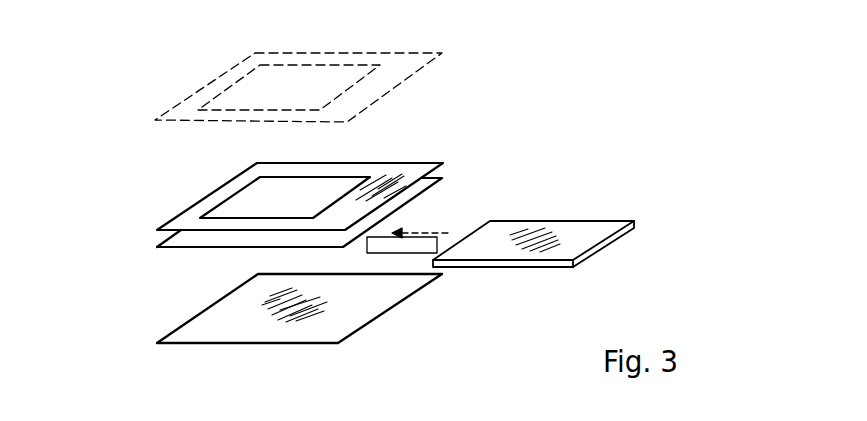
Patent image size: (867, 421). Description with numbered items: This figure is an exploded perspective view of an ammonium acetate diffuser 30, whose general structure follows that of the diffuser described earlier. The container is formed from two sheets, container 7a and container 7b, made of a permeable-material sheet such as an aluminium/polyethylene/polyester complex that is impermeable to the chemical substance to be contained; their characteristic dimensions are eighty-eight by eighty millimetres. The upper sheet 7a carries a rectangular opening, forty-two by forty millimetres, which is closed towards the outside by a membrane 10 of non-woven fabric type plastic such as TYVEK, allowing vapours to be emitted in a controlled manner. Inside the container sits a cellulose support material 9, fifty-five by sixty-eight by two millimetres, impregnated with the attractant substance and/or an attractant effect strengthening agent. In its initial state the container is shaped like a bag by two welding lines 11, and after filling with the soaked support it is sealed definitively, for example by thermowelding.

The diffuser 30 is at (490, 82).
The welding lines 11 is at (257, 68).
The container 7a is at (390, 168).
The membrane 10 is at (400, 204).
The support material 9 is at (597, 230).
The container 7b is at (212, 327).